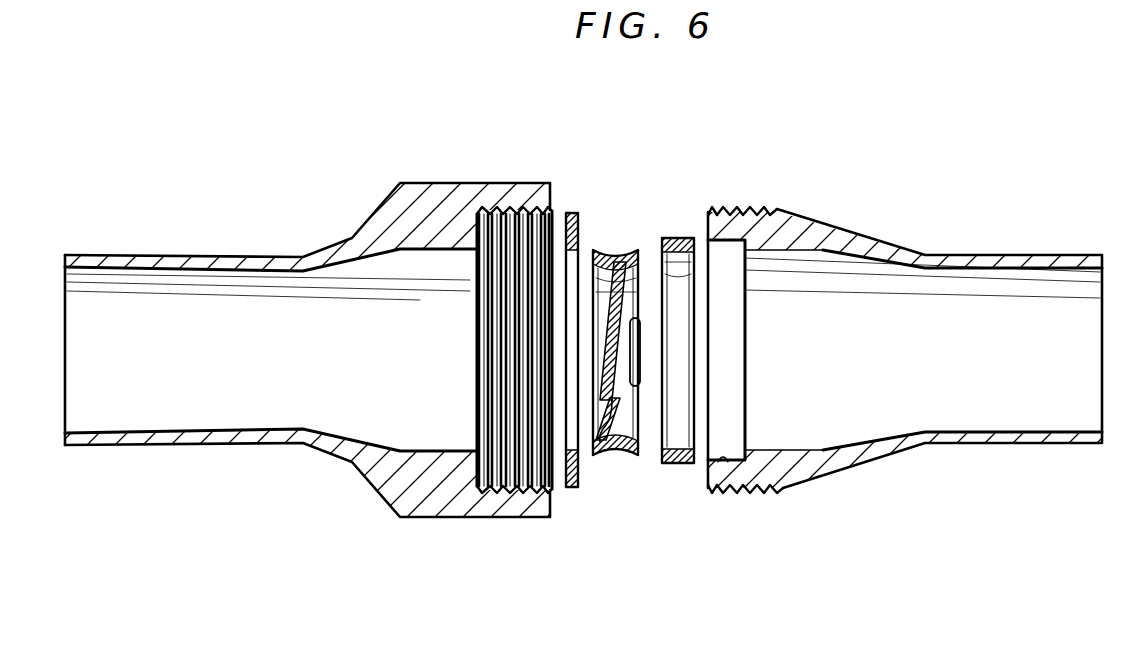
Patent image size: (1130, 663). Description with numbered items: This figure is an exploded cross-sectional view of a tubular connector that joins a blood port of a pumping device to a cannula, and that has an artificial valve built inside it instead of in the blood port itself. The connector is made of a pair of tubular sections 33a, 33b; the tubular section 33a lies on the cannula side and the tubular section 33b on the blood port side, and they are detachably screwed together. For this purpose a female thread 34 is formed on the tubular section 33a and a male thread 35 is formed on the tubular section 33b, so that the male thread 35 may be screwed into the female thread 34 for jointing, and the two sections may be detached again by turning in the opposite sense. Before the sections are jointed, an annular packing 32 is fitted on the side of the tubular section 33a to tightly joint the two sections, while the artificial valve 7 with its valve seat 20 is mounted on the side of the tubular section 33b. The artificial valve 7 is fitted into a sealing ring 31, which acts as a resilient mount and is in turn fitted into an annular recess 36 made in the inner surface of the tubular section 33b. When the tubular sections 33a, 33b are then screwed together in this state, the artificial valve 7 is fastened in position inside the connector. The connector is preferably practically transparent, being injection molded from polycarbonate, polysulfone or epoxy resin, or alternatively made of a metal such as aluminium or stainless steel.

The artificial valve 7 is at (623, 246).
The valve seat 20 is at (618, 455).
The sealing ring 31 is at (684, 238).
The packing 32 is at (578, 227).
The tubular section 33a is at (388, 213).
The tubular section 33b is at (857, 250).
The female thread 34 is at (520, 210).
The male thread 35 is at (730, 209).
The annular recess 36 is at (748, 243).